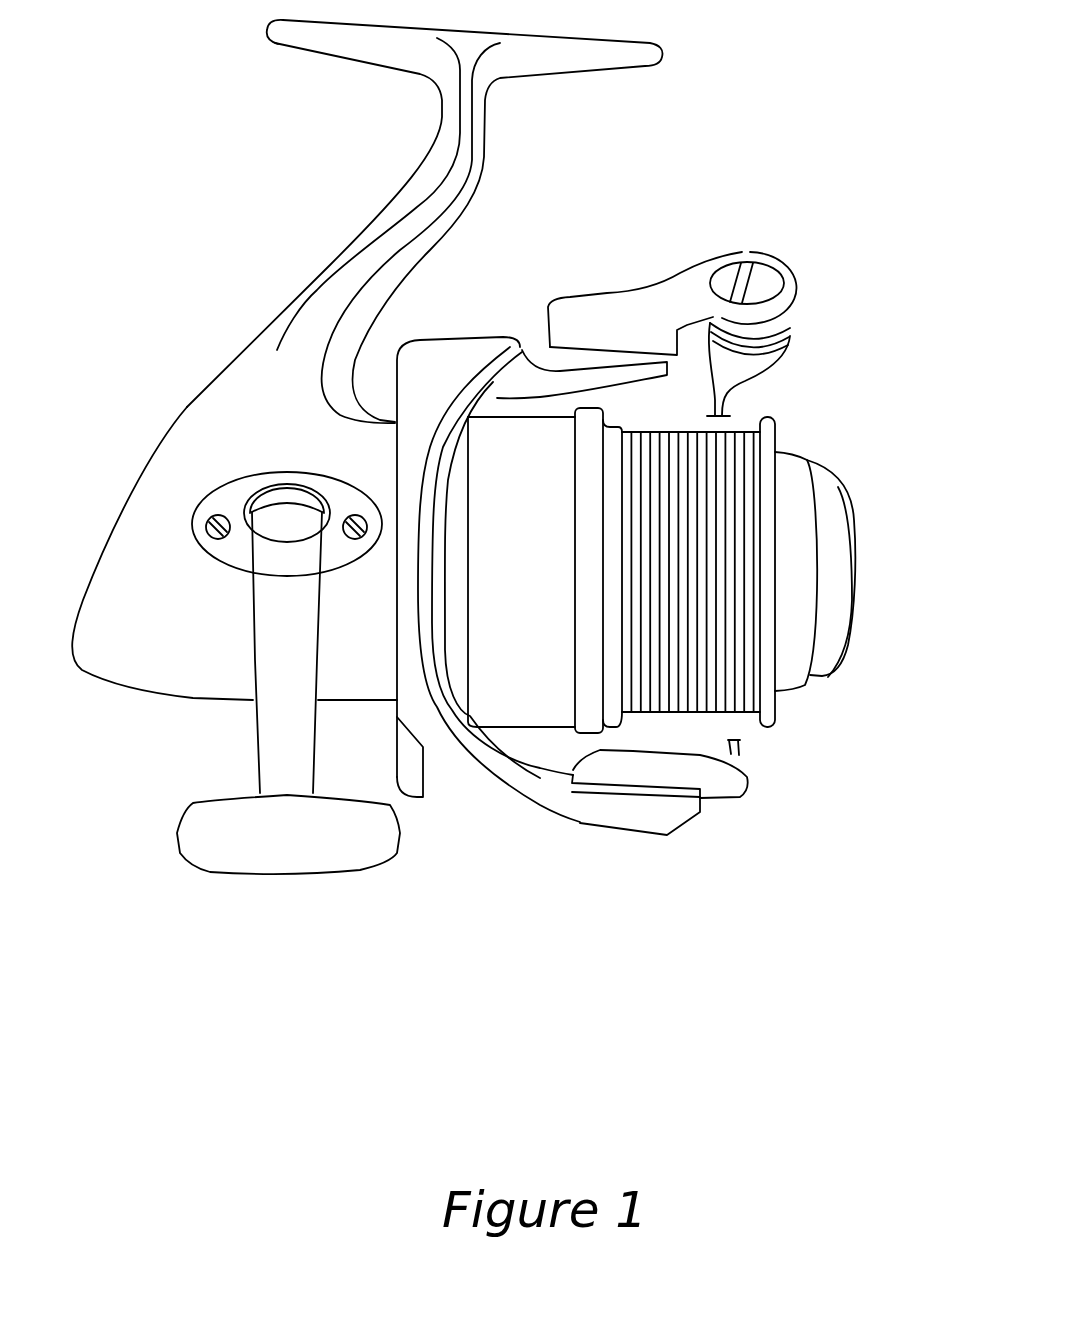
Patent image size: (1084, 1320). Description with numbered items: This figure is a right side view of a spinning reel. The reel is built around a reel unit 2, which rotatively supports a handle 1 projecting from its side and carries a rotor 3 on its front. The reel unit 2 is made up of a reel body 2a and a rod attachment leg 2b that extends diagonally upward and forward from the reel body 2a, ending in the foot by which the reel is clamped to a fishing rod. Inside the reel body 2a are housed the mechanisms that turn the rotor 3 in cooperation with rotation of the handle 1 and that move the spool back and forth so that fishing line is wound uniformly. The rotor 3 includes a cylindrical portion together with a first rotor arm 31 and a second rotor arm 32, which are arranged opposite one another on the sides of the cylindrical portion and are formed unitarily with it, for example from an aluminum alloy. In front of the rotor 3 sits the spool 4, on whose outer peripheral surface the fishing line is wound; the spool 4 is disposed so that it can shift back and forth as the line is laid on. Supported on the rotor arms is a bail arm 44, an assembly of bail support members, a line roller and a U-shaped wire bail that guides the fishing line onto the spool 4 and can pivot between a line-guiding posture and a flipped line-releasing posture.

The handle 1 is at (272, 739).
The reel unit 2 is at (366, 360).
The reel body 2a is at (163, 477).
The rod attachment leg 2b is at (272, 312).
The rotor 3 is at (664, 547).
The first rotor arm 31 is at (585, 342).
The second rotor arm 32 is at (605, 810).
The spool 4 is at (730, 433).
The bail arm 44 is at (815, 318).